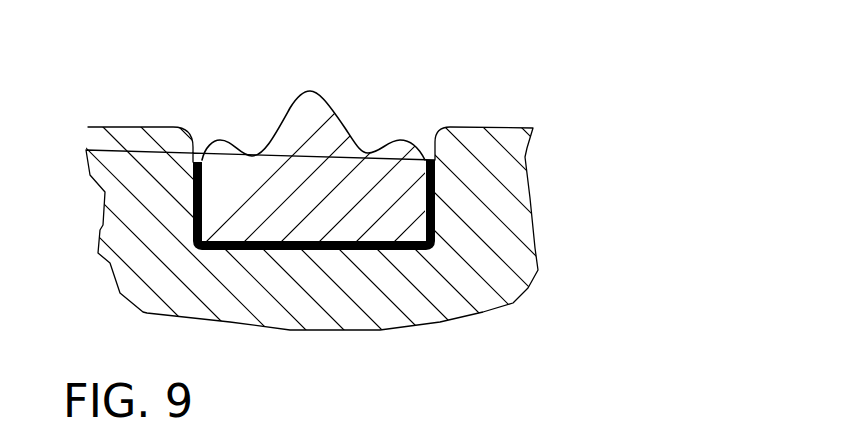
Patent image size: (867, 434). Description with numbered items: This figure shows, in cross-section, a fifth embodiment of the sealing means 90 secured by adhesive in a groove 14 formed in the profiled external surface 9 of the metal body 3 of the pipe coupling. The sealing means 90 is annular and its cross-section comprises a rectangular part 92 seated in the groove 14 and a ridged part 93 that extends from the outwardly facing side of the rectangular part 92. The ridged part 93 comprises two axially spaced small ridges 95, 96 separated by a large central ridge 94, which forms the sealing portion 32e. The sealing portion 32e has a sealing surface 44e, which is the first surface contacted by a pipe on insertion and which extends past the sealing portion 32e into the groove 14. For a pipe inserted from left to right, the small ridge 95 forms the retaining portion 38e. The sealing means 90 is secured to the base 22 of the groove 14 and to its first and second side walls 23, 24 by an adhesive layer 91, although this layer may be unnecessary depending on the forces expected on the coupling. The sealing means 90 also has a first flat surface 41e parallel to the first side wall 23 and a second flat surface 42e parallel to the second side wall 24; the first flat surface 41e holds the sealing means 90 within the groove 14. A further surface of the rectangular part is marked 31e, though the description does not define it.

The body 3 is at (503, 187).
The profiled external surface 9 is at (480, 127).
The groove 14 is at (375, 250).
The base 22 is at (317, 250).
The first side wall 23 is at (192, 198).
The second side wall 24 is at (437, 197).
The insert bottom surface 31e is at (281, 212).
The sealing portion 32e is at (288, 110).
The retaining portion 38e is at (222, 140).
The first flat surface 41e is at (202, 213).
The second flat surface 42e is at (437, 213).
The sealing surface 44e is at (308, 122).
The sealing means 90 is at (423, 252).
The adhesive layer 91 is at (318, 182).
The rectangular part 92 is at (222, 192).
The ridged part 93 is at (355, 123).
The large central ridge 94 is at (319, 107).
The small ridge 95 is at (213, 150).
The small ridge 96 is at (412, 163).